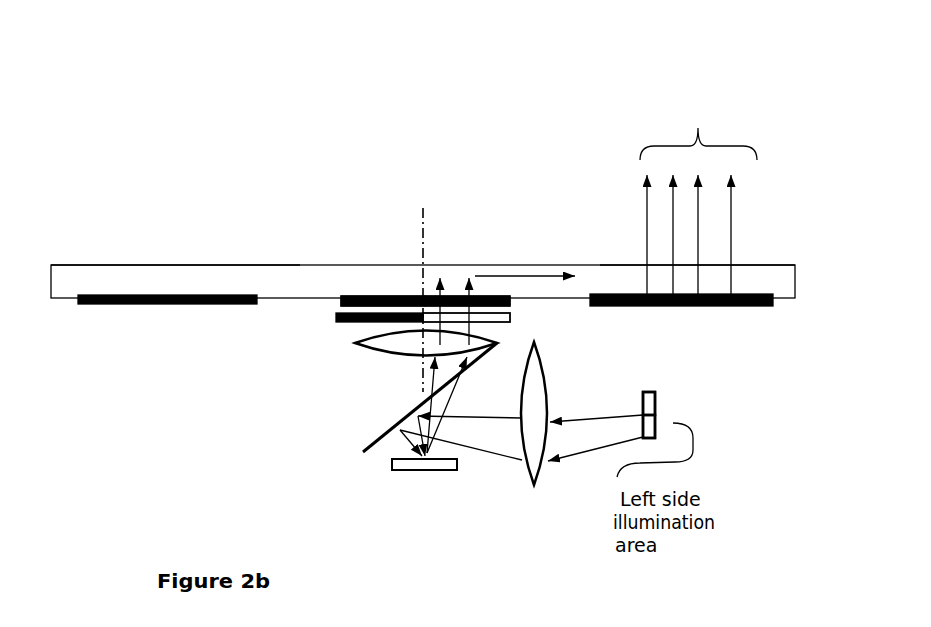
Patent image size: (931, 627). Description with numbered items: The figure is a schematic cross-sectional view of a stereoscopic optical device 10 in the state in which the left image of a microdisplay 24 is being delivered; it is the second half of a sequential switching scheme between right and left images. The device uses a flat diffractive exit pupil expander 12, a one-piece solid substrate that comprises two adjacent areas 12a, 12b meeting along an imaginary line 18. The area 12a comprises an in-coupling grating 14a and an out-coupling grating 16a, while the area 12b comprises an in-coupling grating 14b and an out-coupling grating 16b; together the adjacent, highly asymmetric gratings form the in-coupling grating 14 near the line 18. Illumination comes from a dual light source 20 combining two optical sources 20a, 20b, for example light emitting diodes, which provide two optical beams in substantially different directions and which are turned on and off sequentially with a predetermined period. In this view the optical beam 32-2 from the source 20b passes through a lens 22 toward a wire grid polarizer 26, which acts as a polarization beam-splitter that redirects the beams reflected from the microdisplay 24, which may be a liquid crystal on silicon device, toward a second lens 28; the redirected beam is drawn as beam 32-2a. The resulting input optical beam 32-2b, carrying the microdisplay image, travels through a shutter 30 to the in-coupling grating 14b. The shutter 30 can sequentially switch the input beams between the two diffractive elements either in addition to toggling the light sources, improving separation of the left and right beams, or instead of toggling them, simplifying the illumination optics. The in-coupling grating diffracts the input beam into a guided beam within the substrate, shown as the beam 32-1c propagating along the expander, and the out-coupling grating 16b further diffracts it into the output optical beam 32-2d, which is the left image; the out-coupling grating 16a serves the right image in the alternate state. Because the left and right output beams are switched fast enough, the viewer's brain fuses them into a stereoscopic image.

The stereoscopic optical device 10 is at (410, 113).
The flat diffractive exit pupil expander 12 is at (178, 263).
The first area of the exit pupil expander 12a is at (112, 277).
The second area of the exit pupil expander 12b is at (745, 280).
The in-coupling grating 14 is at (353, 293).
The in-coupling grating 14a is at (400, 295).
The in-coupling grating 14b is at (463, 294).
The out-coupling grating 16a is at (118, 305).
The out-coupling grating 16b is at (717, 303).
The line 18 is at (421, 210).
The dual light source 20 is at (656, 391).
The optical source 20a is at (657, 405).
The optical source 20b is at (663, 425).
The collimating lens 22 is at (530, 482).
The microdisplay 24 is at (410, 472).
The wire grid polarizer 26 is at (363, 449).
The focusing lens 28 is at (407, 354).
The shutter 30 is at (336, 318).
The optical beam 32-1c is at (537, 272).
The optical beam 32-2 is at (618, 443).
The beam reflected toward detector 32-2a is at (403, 430).
The input optical beam 32-2b is at (468, 310).
The output optical beam 32-2d is at (646, 240).